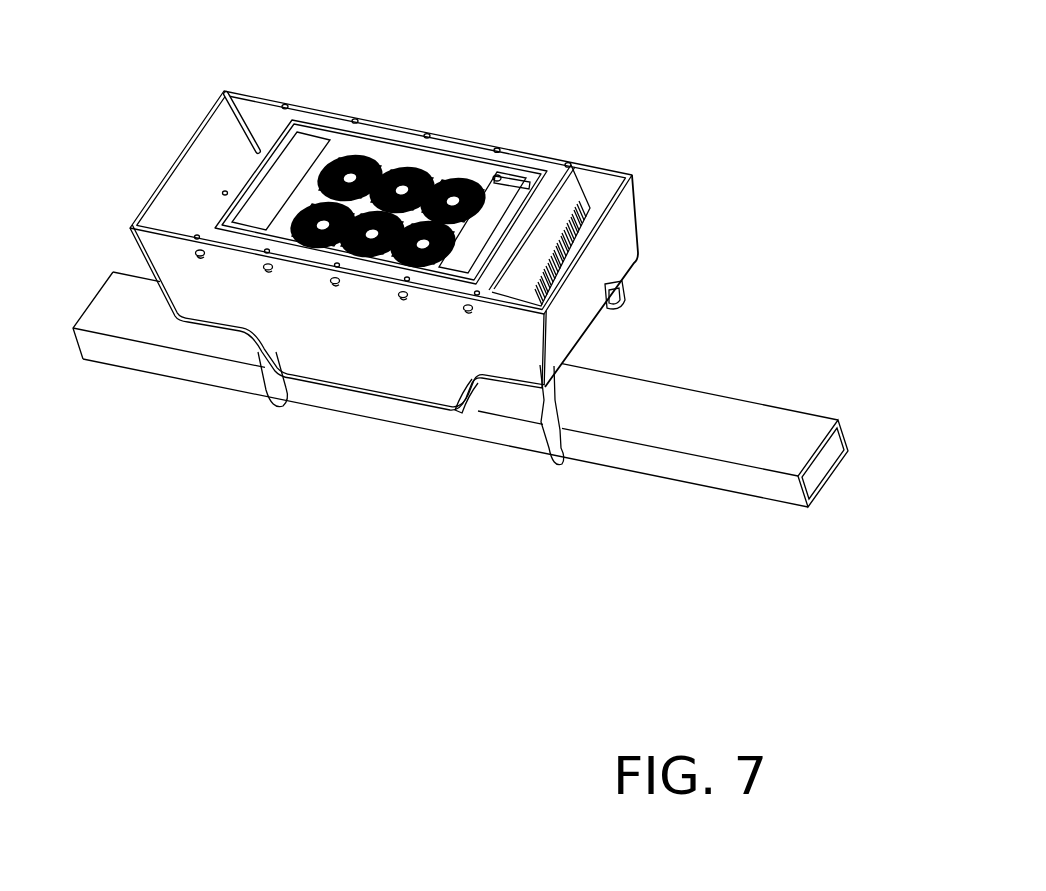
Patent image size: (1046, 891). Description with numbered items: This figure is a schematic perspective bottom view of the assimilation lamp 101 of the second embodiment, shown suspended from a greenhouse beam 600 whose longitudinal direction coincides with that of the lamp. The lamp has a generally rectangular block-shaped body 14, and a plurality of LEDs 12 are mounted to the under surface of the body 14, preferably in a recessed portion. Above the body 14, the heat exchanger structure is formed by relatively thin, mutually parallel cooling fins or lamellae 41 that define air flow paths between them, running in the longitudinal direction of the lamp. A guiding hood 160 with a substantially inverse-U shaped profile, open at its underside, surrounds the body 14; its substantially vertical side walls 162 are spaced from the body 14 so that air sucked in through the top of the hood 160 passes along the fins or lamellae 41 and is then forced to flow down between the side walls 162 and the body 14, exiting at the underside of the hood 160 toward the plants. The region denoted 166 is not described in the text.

The LEDs 12 is at (350, 178).
The body 14 is at (572, 196).
The cooling fins or lamellae 41 is at (568, 247).
The assimilation lamp 101 is at (707, 118).
The guiding hood 160 is at (348, 332).
The side walls 162 is at (605, 267).
The housing 166 is at (210, 152).
The greenhouse beam 600 is at (659, 479).